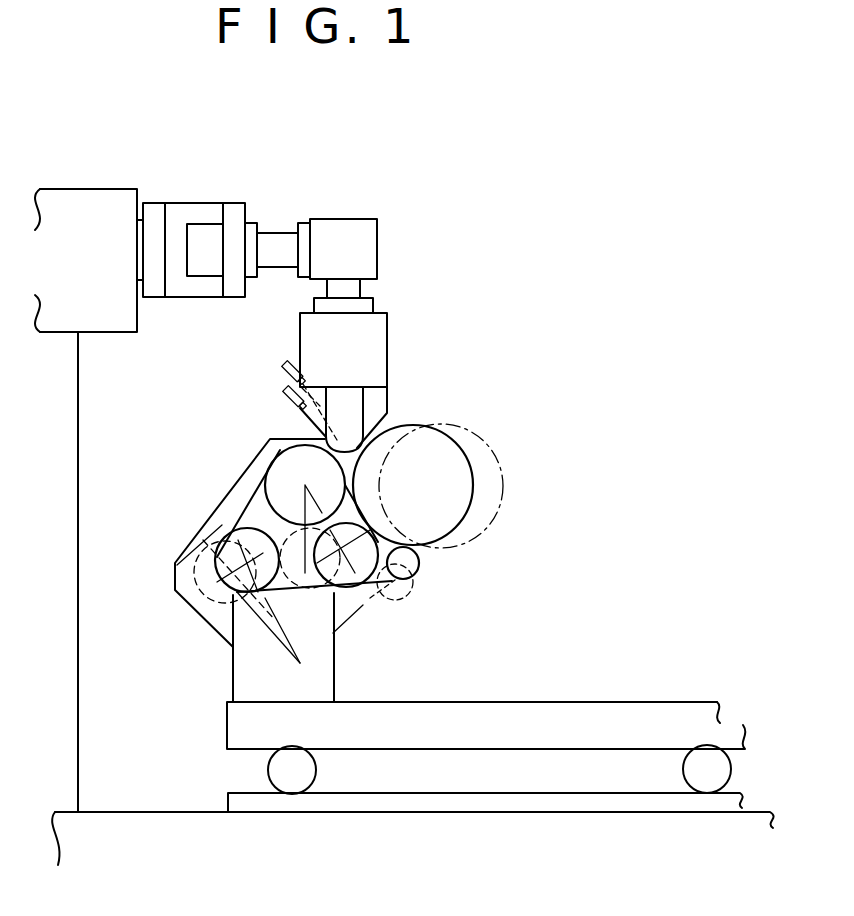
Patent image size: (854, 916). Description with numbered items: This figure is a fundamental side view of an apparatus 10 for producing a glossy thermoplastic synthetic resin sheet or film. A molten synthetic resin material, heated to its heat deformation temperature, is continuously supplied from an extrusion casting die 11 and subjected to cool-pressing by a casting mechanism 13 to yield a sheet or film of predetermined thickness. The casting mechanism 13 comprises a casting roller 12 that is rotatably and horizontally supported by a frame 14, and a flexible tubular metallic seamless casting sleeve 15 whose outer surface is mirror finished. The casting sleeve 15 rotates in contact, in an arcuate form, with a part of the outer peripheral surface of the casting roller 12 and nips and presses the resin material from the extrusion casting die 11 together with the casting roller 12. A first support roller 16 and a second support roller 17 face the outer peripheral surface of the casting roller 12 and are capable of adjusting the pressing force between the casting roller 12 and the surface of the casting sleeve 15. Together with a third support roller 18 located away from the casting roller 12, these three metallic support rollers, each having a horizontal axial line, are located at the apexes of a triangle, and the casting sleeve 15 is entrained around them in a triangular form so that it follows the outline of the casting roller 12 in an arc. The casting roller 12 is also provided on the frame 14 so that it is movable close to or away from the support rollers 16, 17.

The apparatus 10 is at (580, 503).
The extrusion casting die 11 is at (383, 408).
The casting roller 12 is at (443, 465).
The casting mechanism 13 is at (470, 551).
The frame 14 is at (215, 508).
The casting sleeve 15 is at (227, 503).
The first support roller 16 is at (293, 468).
The second support roller 17 is at (392, 583).
The third support roller 18 is at (177, 565).